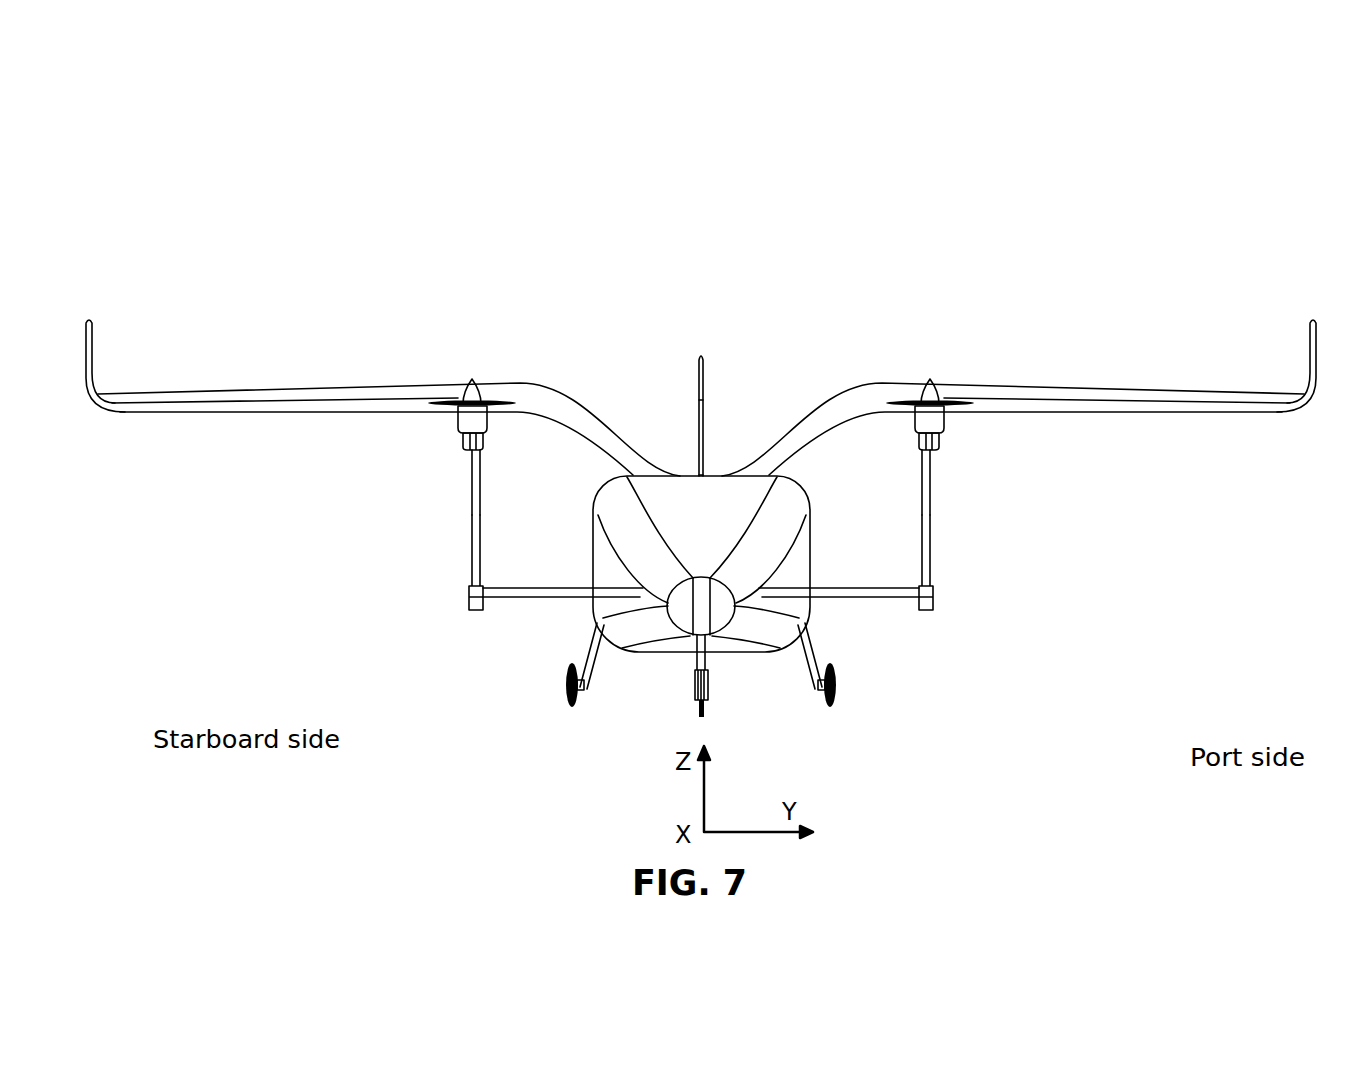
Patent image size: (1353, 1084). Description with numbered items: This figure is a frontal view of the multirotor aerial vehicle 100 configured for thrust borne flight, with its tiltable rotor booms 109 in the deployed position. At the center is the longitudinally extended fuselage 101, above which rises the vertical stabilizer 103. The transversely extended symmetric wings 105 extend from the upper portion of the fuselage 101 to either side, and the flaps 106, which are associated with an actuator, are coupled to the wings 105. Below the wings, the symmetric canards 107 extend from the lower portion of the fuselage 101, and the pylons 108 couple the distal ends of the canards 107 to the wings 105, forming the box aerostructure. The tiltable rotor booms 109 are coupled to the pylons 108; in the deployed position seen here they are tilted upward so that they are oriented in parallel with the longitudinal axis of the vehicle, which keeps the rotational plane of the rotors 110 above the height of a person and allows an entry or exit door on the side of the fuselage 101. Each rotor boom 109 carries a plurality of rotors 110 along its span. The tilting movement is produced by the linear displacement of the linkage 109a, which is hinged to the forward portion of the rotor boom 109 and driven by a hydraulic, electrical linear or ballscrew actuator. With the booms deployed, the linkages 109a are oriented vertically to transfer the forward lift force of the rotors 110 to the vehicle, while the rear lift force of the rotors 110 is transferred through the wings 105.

The multirotor aerial vehicle 100 is at (610, 214).
The fuselage 101 is at (665, 655).
The vertical stabilizer 103 is at (703, 352).
The wings 105 is at (262, 388).
The flaps 106 is at (157, 415).
The canards 107 is at (545, 600).
The pylons 108 is at (465, 607).
The tiltable rotor booms 109 is at (463, 443).
The linkage 109a is at (465, 515).
The rotors 110 is at (430, 403).